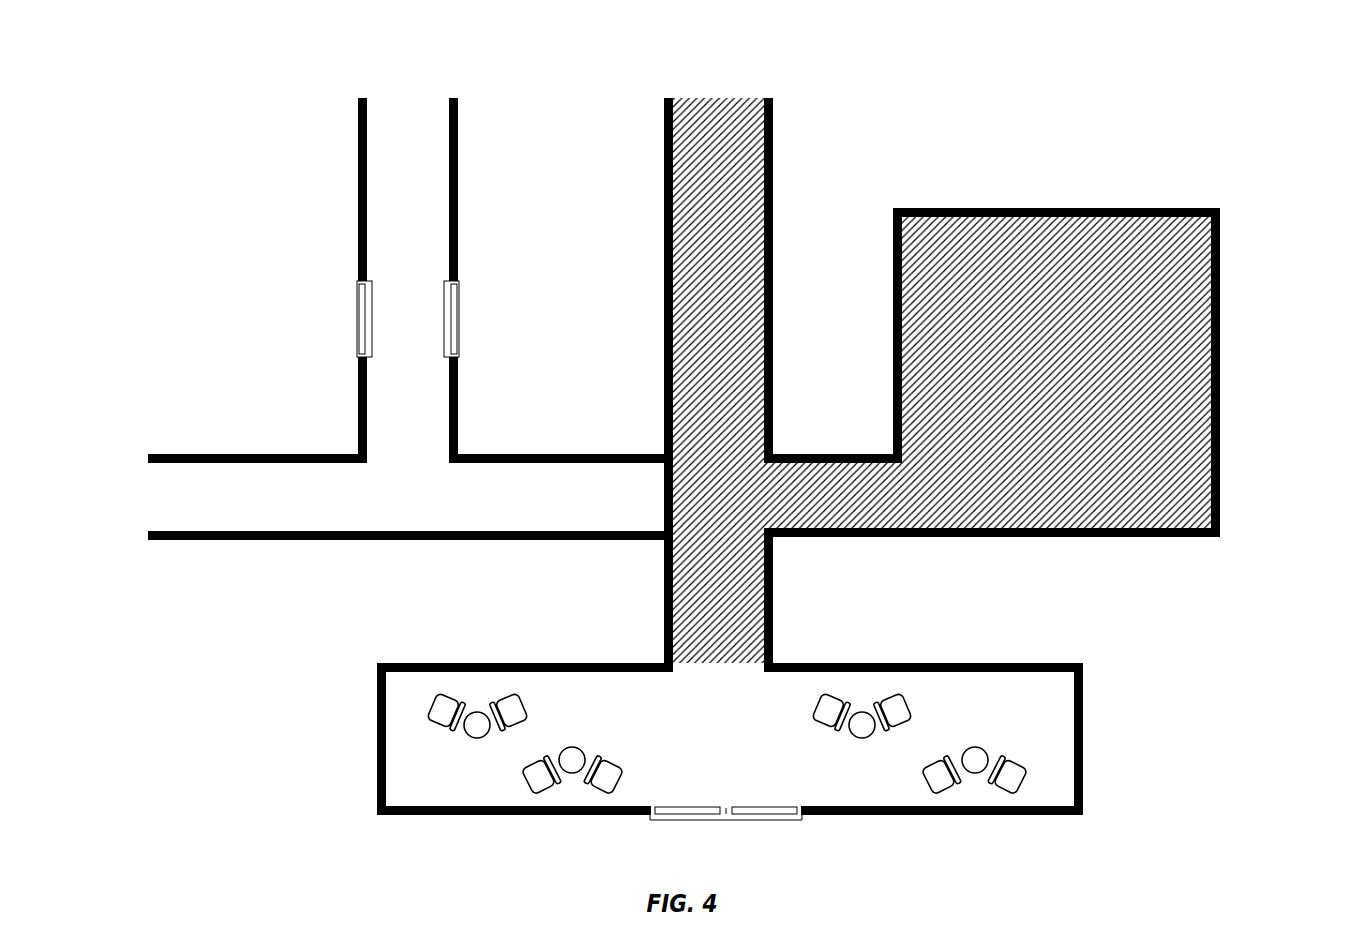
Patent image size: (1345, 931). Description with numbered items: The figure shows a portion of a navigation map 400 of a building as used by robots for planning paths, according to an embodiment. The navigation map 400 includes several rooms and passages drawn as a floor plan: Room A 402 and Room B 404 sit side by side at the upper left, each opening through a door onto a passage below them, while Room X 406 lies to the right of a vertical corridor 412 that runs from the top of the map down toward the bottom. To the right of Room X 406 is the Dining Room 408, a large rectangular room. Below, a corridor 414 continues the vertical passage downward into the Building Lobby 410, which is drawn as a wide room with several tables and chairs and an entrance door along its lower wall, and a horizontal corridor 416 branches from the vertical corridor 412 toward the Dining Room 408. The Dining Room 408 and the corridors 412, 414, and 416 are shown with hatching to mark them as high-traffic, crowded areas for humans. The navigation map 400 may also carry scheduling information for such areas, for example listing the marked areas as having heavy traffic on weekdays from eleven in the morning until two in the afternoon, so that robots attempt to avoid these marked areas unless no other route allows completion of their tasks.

The navigation map 400 is at (1244, 86).
The Room A 402 is at (242, 222).
The Room B 404 is at (537, 222).
The Room X 406 is at (808, 272).
The Dining Room 408 is at (1196, 336).
The Building Lobby 410 is at (1017, 690).
The corridor 412 is at (773, 152).
The corridor 414 is at (773, 612).
The corridor 416 is at (827, 518).